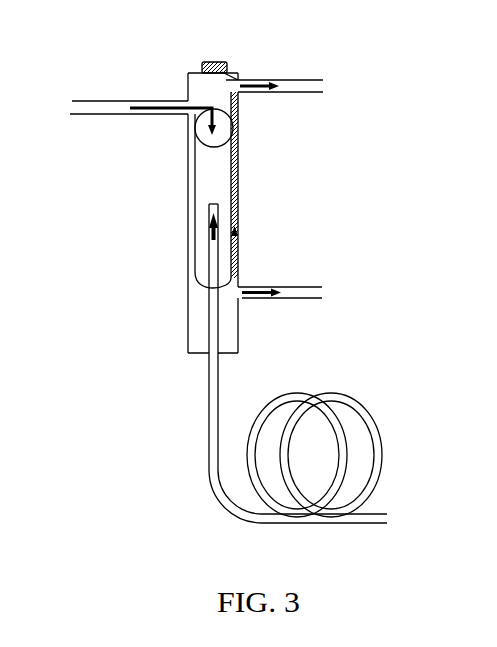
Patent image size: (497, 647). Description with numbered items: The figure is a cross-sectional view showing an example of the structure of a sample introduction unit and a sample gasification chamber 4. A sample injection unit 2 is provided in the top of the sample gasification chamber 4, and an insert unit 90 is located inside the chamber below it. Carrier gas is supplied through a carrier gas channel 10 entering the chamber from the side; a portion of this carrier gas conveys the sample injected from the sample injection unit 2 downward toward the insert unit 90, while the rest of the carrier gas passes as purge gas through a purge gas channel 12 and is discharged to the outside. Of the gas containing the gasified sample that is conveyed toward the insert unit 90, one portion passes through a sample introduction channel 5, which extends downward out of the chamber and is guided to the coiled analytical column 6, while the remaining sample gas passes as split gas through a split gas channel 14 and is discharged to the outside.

The sample injection unit 2 is at (220, 60).
The sample gasification chamber 4 is at (241, 222).
The sample introduction channel 5 is at (220, 389).
The analytical column 6 is at (356, 394).
The carrier gas channel 10 is at (98, 103).
The purge gas channel 12 is at (309, 80).
The split gas channel 14 is at (303, 287).
The insert unit 90 is at (240, 173).